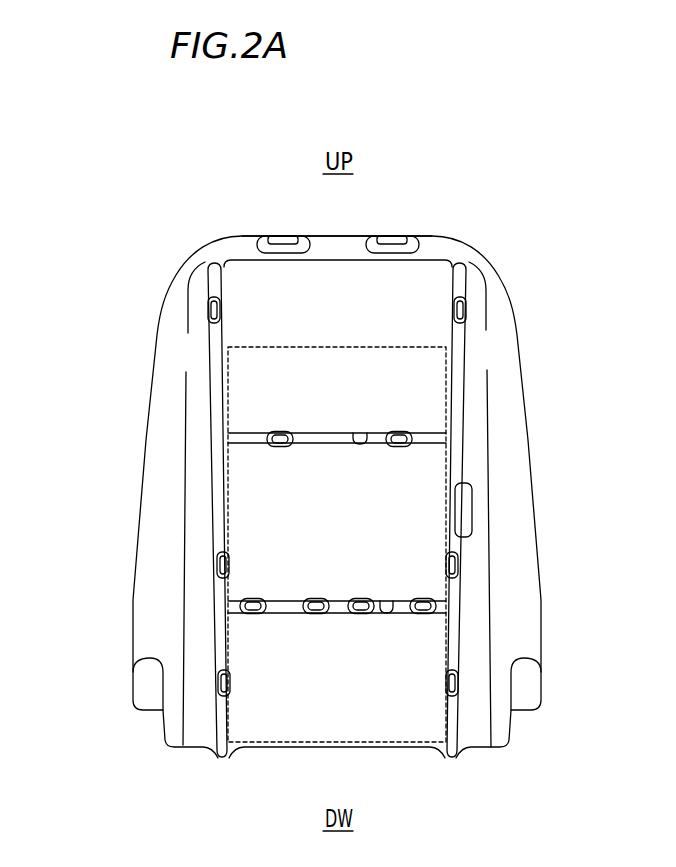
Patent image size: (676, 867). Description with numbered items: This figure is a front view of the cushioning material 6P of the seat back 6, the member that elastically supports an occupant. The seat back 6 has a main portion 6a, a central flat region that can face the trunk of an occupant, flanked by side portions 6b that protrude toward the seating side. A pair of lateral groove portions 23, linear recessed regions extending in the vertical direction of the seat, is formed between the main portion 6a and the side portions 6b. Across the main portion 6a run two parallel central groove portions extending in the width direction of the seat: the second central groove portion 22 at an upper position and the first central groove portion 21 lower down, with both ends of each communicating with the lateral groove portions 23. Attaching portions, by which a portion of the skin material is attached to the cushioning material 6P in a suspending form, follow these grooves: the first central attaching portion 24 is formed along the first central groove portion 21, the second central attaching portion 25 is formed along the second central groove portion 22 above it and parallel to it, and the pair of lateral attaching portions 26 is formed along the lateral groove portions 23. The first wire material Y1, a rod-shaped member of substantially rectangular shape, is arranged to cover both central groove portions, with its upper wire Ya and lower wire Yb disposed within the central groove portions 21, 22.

The seat back 6 is at (345, 497).
The cushioning material 6P is at (512, 290).
The main portion 6a is at (354, 319).
The side portions 6b is at (199, 367).
The lateral groove portion 23 is at (222, 400).
The lateral attaching portions 26 is at (212, 432).
The second central attaching portion 25 is at (325, 430).
The second central groove portion 22 is at (367, 430).
The first central attaching portion 24 is at (340, 616).
The first central groove portion 21 is at (390, 606).
The first wire material Y1 is at (338, 523).
The upper wire Ya is at (278, 448).
The lower wire Yb is at (253, 598).